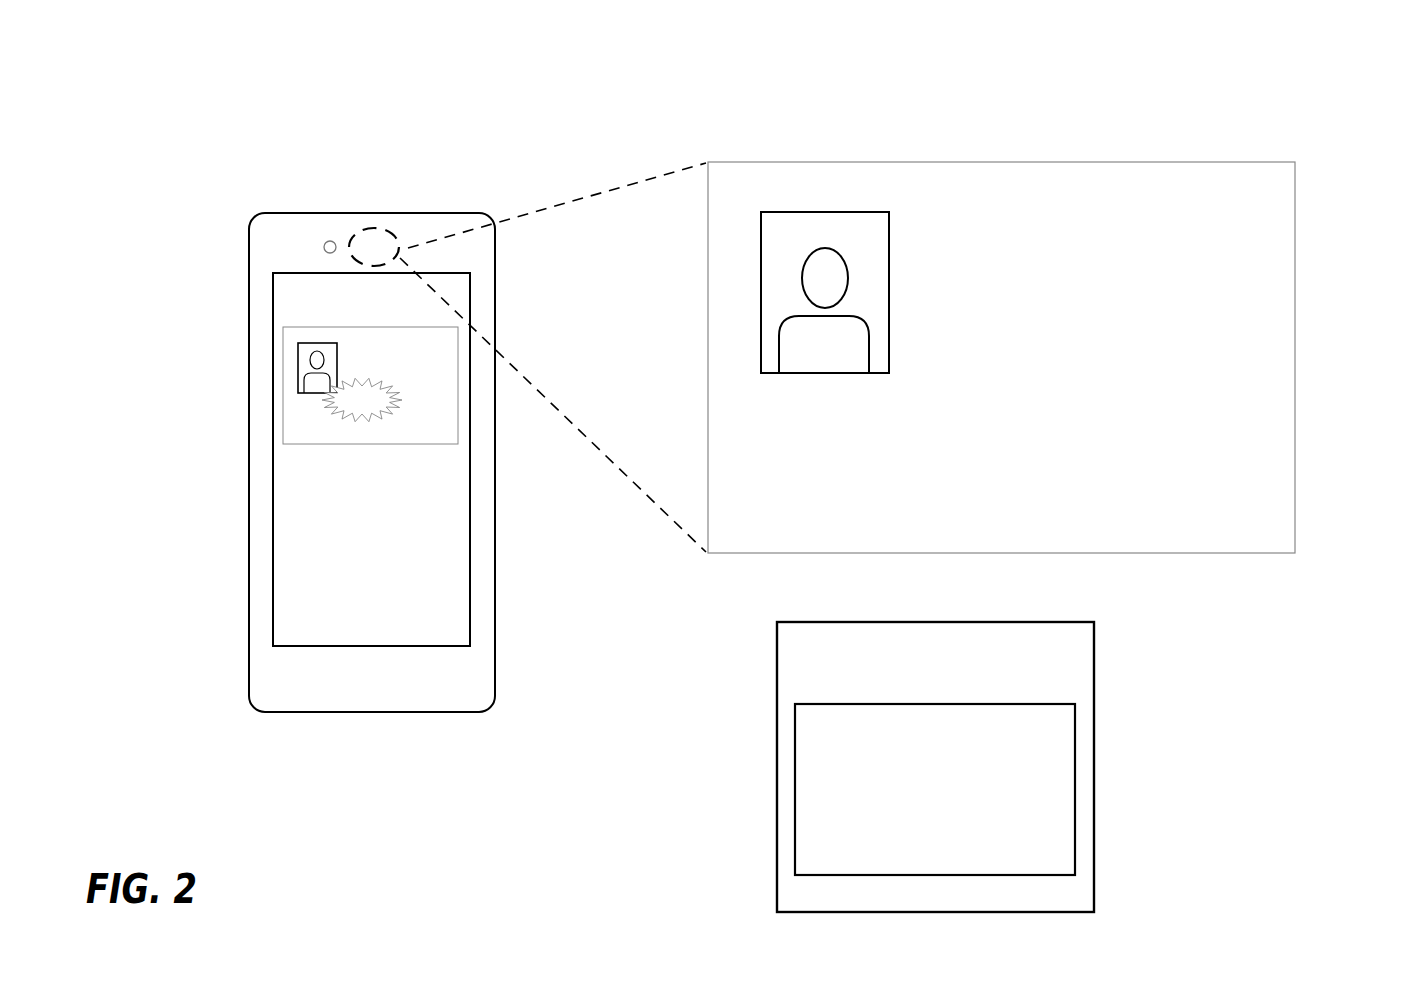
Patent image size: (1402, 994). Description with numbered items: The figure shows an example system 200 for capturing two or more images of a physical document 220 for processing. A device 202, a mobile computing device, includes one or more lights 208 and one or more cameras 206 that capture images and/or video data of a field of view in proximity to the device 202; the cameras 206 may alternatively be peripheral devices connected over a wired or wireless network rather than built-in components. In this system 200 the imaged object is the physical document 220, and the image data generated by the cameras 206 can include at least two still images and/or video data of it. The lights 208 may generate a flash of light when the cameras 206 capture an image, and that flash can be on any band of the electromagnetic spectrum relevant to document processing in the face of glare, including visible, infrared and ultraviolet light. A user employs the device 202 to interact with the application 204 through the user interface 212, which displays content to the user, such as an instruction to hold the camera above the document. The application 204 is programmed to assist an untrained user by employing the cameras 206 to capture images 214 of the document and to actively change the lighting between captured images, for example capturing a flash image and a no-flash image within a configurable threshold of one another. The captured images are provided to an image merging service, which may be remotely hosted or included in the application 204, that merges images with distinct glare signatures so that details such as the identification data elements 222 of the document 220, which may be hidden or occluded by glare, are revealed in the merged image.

The system 200 is at (222, 92).
The device 202 is at (259, 690).
The application 204 is at (935, 789).
The camera 206 is at (388, 235).
The light 208 is at (330, 240).
The user interface 212 is at (432, 645).
The image 214 is at (448, 440).
The physical document 220 is at (1233, 162).
The identification data element 222 is at (951, 226).